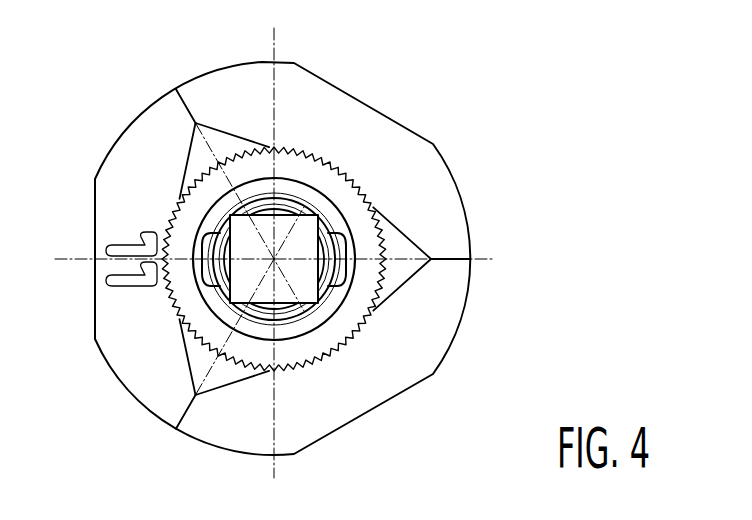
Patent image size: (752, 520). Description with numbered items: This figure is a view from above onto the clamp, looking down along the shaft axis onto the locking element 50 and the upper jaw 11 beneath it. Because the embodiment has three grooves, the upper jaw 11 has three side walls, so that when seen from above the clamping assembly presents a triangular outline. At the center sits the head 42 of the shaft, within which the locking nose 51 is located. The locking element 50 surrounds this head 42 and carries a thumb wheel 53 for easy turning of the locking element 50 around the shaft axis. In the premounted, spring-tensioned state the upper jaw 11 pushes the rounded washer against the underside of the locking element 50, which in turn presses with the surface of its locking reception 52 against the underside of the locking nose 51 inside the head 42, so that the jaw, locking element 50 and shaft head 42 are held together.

The upper jaw 11 is at (252, 82).
The head 42 is at (238, 283).
The locking element 50 is at (290, 160).
The locking nose 51 is at (212, 240).
The locking reception 52 is at (205, 250).
The thumb wheel 53 is at (390, 245).